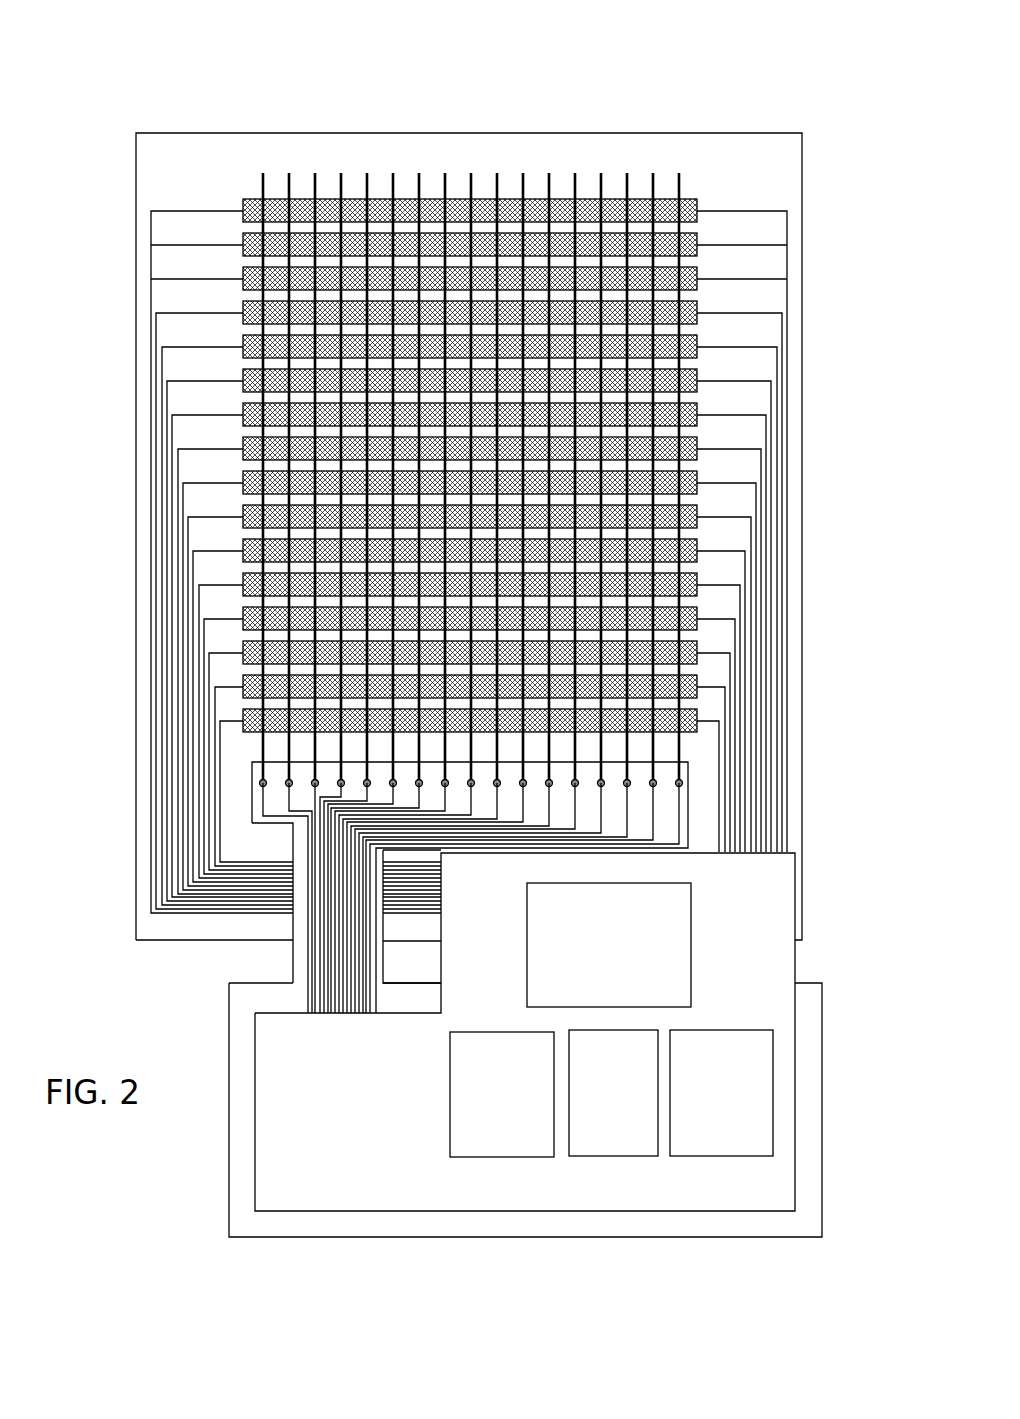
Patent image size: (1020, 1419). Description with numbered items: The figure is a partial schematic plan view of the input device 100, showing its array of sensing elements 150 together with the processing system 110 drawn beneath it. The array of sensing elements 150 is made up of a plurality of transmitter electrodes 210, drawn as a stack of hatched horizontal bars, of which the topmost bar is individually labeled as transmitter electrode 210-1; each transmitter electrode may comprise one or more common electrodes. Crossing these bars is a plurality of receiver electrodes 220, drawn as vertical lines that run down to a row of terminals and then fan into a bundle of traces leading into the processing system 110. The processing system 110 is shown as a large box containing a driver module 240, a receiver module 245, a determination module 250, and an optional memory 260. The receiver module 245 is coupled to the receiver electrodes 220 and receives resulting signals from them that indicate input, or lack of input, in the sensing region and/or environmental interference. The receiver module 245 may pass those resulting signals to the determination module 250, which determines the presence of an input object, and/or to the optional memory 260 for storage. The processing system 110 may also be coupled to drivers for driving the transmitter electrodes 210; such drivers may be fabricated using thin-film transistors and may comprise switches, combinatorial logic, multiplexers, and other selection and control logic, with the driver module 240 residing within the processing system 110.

The input device 100 is at (207, 112).
The array of sensing elements 150 is at (325, 186).
The transmitter electrodes 210 is at (113, 752).
The transmitter electrode 210-1 is at (243, 205).
The receiver electrodes 220 is at (683, 142).
The processing system 110 is at (667, 1198).
The determination module 250 is at (630, 977).
The receiver module 245 is at (519, 1127).
The driver module 240 is at (632, 1127).
The optional memory 260 is at (739, 1127).